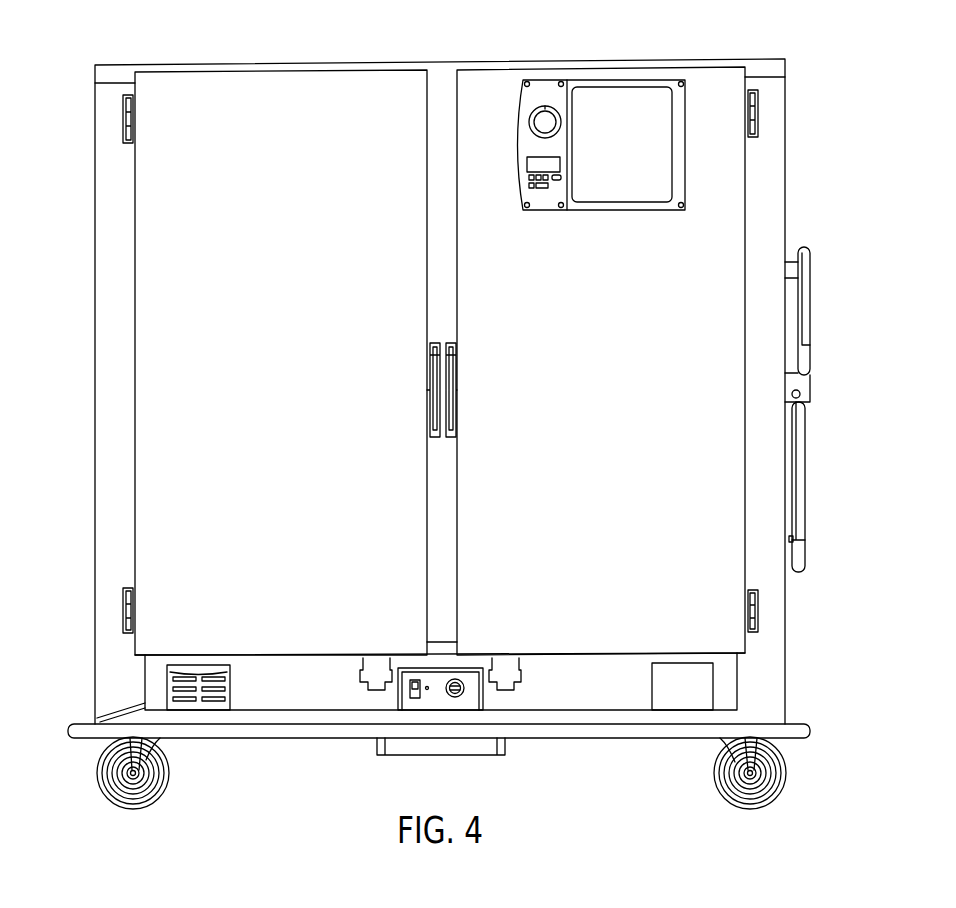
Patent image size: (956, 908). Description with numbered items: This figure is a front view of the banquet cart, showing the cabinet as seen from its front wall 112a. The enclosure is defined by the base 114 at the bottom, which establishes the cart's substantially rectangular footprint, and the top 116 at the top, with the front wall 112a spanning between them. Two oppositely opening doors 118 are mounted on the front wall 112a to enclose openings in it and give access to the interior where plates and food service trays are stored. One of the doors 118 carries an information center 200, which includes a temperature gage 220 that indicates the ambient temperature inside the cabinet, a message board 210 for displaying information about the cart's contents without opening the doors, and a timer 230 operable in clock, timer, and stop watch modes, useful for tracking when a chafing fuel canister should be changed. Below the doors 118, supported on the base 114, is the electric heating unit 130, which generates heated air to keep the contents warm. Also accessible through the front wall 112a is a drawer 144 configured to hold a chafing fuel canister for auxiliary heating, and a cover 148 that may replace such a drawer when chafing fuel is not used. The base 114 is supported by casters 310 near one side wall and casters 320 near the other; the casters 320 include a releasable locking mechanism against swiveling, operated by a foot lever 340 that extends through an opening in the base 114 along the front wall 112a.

The front wall 112a is at (773, 182).
The base 114 is at (313, 740).
The top 116 is at (137, 66).
The doors 118 is at (612, 372).
The electric heating unit 130 is at (433, 680).
The drawer 144 is at (223, 705).
The cover 148 is at (660, 680).
The information center 200 is at (612, 80).
The message board 210 is at (663, 148).
The temperature gage 220 is at (529, 123).
The timer 230 is at (528, 165).
The casters 310 is at (711, 790).
The casters 320 is at (171, 792).
The lever 340 is at (105, 707).